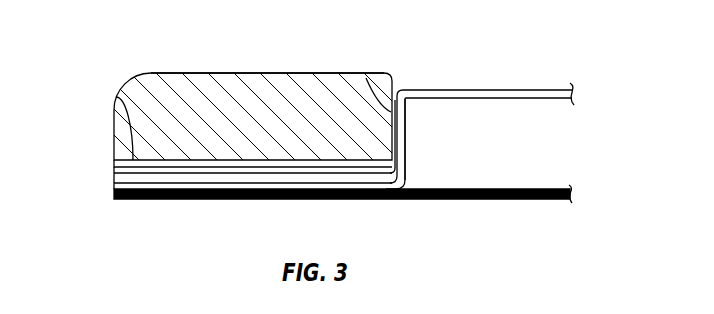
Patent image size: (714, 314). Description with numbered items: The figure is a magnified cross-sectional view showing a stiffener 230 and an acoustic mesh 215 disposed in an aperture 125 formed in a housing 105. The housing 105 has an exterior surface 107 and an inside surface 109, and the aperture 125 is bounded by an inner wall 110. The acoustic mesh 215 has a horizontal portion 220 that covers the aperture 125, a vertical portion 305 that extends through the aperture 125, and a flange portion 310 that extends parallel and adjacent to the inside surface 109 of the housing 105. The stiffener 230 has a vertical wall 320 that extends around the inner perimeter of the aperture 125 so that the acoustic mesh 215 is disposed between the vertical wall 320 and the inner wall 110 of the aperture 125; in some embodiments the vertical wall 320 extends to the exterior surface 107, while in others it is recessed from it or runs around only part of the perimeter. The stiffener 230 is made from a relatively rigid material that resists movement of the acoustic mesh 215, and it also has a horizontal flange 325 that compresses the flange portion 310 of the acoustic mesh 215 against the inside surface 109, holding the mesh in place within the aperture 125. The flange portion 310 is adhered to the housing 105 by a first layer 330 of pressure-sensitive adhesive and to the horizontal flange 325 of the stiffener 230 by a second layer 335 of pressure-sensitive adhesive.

The housing 105 is at (176, 92).
The exterior surface 107 is at (252, 73).
The inside surface 109 is at (116, 112).
The inner wall 110 is at (372, 86).
The aperture 125 is at (512, 156).
The acoustic mesh 215 is at (438, 90).
The horizontal portion 220 is at (530, 96).
The stiffener 230 is at (403, 189).
The vertical portion 305 is at (398, 140).
The flange portion 310 is at (380, 185).
The vertical wall 320 is at (407, 155).
The horizontal flange 325 is at (207, 188).
The first layer 330 is at (114, 166).
The second layer 335 is at (114, 178).